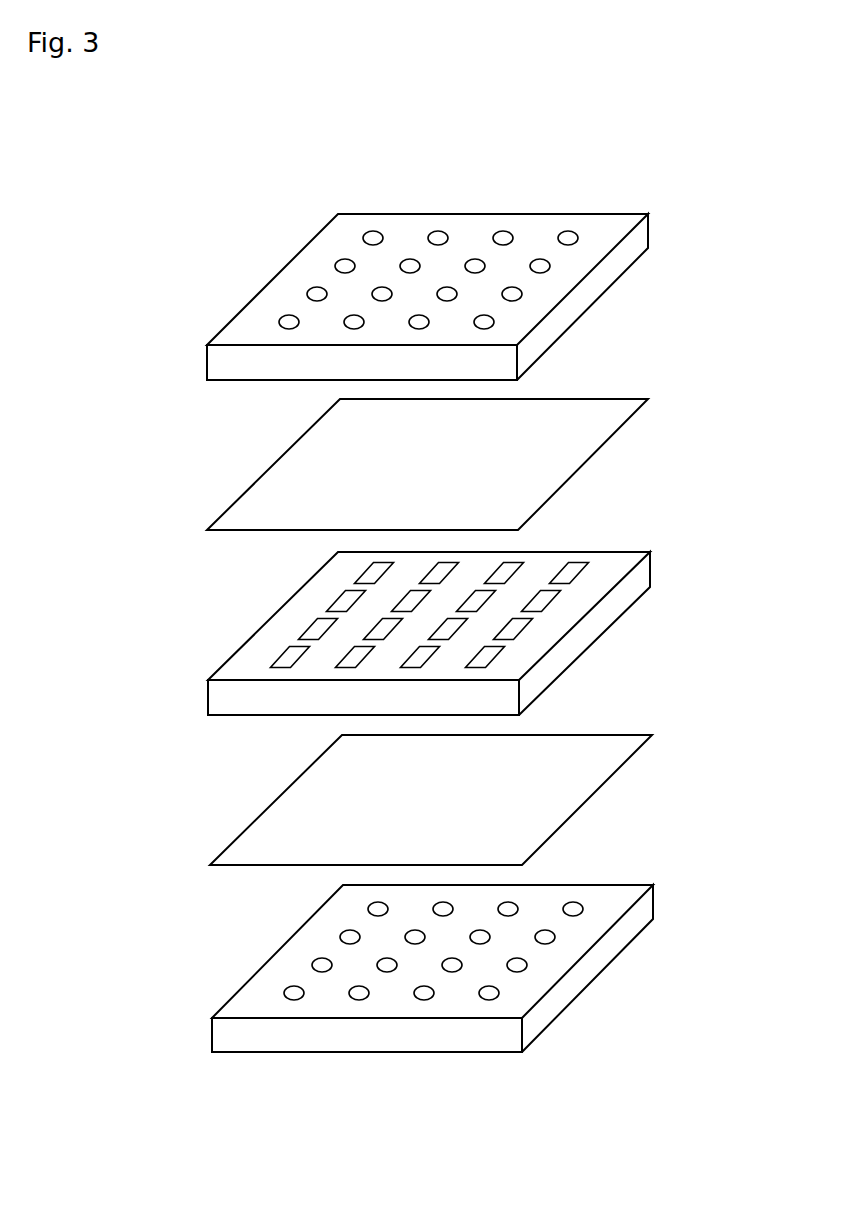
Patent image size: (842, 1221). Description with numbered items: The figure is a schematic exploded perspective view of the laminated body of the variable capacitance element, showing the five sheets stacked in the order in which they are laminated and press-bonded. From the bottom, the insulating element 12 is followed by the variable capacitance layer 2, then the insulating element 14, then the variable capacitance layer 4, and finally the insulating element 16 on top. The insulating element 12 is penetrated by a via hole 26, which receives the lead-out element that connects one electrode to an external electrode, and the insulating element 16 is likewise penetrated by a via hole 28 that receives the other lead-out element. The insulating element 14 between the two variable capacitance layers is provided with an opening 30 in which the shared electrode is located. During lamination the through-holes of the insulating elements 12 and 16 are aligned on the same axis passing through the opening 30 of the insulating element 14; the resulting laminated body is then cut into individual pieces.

The insulating element 16 is at (458, 297).
The via hole 28 is at (288, 318).
The variable capacitance layer 4 is at (620, 413).
The insulating element 14 is at (460, 633).
The opening 30 is at (291, 655).
The variable capacitance layer 2 is at (622, 748).
The insulating element 12 is at (461, 968).
The via hole 26 is at (292, 990).